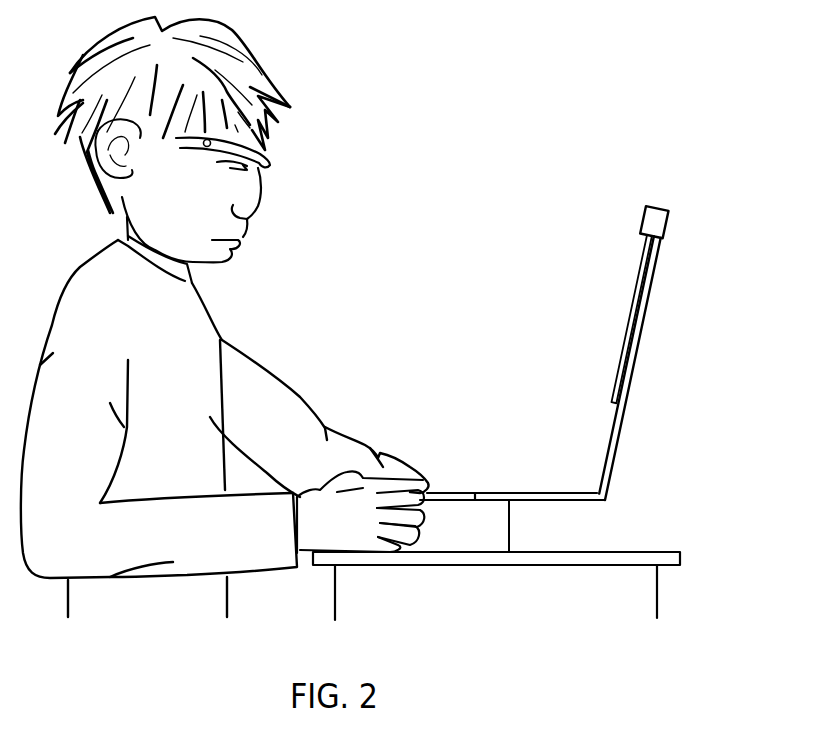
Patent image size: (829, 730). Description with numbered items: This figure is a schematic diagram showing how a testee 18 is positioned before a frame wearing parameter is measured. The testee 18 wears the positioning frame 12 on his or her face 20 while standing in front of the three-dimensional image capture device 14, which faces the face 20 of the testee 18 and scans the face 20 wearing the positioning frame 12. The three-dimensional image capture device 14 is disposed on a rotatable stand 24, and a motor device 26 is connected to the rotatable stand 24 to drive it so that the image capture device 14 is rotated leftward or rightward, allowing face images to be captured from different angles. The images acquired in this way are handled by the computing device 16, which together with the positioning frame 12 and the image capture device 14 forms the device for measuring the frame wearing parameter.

The positioning frame 12 is at (276, 153).
The 3D image capture device 14 is at (665, 222).
The computing device 16 is at (647, 298).
The testee 18 is at (275, 378).
The face 20 is at (228, 260).
The rotatable stand 24 is at (623, 447).
The motor device 26 is at (491, 512).